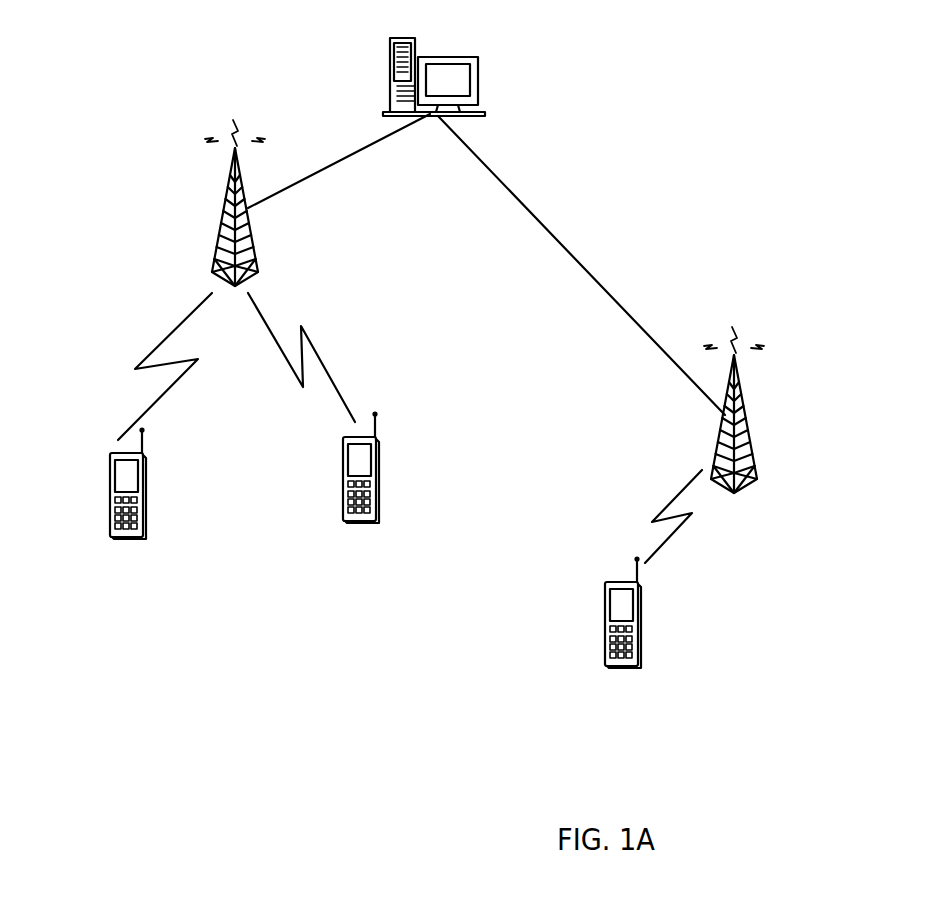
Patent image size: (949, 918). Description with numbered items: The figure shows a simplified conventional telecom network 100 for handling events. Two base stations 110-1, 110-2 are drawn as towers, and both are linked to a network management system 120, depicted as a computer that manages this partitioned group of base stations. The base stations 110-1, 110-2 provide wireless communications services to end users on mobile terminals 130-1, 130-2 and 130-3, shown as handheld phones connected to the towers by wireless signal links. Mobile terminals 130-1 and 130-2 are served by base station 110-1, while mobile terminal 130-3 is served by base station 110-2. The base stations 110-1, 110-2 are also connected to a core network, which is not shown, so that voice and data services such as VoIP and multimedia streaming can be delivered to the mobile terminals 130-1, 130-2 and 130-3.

The network 100 is at (782, 110).
The base station 110-1 is at (203, 192).
The base station 110-2 is at (753, 423).
The network management system 120 is at (477, 73).
The mobile terminal 130-1 is at (128, 539).
The mobile terminal 130-2 is at (355, 523).
The mobile terminal 130-3 is at (641, 640).